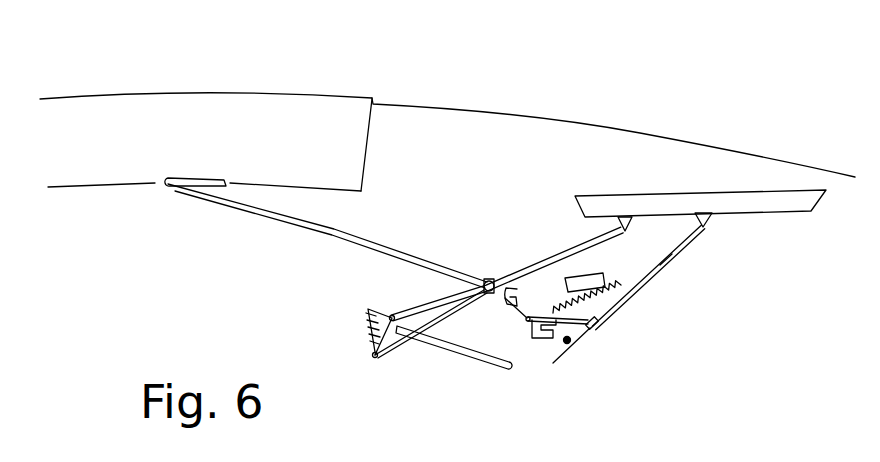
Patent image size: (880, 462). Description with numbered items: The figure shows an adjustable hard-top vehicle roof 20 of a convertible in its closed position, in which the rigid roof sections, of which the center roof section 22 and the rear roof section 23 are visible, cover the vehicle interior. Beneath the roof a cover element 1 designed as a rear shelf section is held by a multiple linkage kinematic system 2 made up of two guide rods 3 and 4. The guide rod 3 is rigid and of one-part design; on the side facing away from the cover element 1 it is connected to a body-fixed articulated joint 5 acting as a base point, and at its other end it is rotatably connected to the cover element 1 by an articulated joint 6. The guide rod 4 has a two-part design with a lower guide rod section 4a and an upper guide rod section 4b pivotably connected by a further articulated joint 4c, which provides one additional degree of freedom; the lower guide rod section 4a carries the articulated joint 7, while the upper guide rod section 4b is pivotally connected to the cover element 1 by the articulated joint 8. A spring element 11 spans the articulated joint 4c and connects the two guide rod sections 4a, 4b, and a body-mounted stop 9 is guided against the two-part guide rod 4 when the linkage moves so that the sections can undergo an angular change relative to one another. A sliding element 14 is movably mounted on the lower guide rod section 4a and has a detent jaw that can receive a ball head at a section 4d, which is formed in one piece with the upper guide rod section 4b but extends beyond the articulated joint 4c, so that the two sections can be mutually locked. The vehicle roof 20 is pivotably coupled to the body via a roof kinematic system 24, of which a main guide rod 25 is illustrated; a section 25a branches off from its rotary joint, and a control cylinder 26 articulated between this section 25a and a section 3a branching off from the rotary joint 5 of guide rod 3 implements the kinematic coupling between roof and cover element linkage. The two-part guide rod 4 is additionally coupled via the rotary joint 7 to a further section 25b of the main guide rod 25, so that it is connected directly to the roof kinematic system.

The cover element 1 is at (682, 203).
The multiple linkage kinematic system 2 is at (667, 280).
The guide rod 3 is at (552, 254).
The section of the guide rod 3a is at (370, 348).
The guide rod 4 is at (640, 290).
The lower guide rod section 4a is at (530, 318).
The upper guide rod section 4b is at (678, 250).
The articulated joint 4c is at (592, 332).
The section 4d is at (560, 361).
The articulated joint 5 is at (392, 316).
The articulated joint 6 is at (631, 230).
The articulated joint 7 is at (524, 318).
The articulated joint 8 is at (710, 222).
The stop 9 is at (580, 278).
The spring element 11 is at (618, 283).
The sliding element 14 is at (533, 339).
The vehicle roof 20 is at (244, 66).
The center roof section 22 is at (272, 104).
The rear roof section 23 is at (538, 118).
The roof kinematic system 24 is at (373, 232).
The main guide rod 25 is at (257, 217).
The section of the main guide rod 25a is at (492, 280).
The section of the main guide rod 25b is at (503, 280).
The control cylinder 26 is at (418, 334).